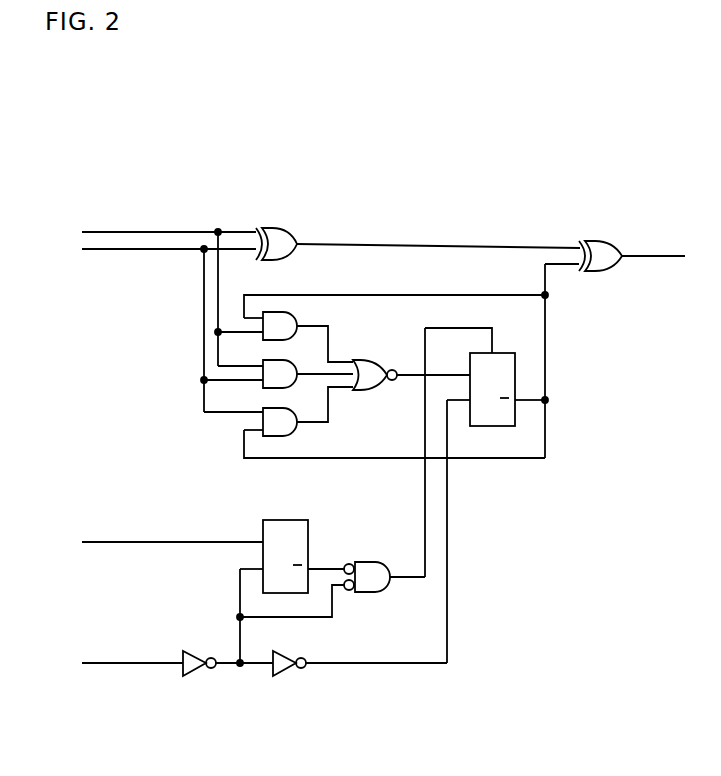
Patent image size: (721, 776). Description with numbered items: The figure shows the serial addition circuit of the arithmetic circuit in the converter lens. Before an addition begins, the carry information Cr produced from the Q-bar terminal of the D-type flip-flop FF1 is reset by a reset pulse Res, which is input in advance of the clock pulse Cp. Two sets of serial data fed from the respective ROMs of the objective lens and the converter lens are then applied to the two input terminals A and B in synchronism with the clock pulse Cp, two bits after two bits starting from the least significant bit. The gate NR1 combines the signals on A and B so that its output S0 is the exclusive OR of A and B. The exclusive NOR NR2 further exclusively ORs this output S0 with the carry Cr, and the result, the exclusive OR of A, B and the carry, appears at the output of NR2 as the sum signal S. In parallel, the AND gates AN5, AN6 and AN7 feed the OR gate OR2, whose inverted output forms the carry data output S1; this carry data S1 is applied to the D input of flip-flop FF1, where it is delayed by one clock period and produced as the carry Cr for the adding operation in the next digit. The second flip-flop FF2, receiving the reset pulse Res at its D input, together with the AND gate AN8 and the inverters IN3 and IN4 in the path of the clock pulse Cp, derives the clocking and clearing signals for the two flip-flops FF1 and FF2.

The NOR gate NR1 is at (276, 227).
The exclusive NOR NR2 is at (602, 250).
The AND gate AN5 is at (299, 317).
The AND gate AN6 is at (302, 355).
The AND gate AN7 is at (302, 402).
The AND gate with inverted inputs AN8 is at (385, 562).
The OR gate OR2 is at (371, 362).
The D-type flip-flop FF1 is at (505, 353).
The second flip-flop FF2 is at (308, 520).
The inverter IN3 is at (197, 677).
The inverter IN4 is at (285, 677).
The input terminal A is at (163, 295).
The input terminal B is at (163, 326).
The output of NOR gate S0 is at (438, 234).
The carry data output S1 is at (433, 365).
The sum signal S is at (653, 244).
The carry information Cr is at (530, 391).
The reset pulse Res is at (150, 543).
The clock pulse Cp is at (116, 664).